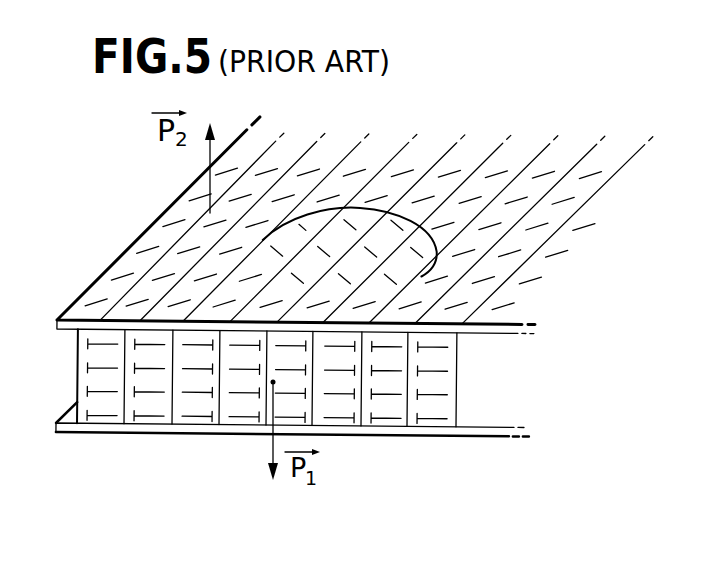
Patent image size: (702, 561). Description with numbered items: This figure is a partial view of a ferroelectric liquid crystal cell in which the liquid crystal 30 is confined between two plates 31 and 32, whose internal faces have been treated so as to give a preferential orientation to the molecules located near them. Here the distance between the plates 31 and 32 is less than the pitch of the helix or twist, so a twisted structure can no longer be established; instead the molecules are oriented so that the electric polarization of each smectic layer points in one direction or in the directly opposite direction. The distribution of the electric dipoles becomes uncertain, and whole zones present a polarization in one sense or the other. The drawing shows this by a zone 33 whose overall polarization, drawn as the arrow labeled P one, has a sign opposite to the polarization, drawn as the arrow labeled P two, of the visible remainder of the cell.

The liquid crystal 30 is at (98, 375).
The plate 31 is at (131, 258).
The plate 32 is at (71, 426).
The zone 33 is at (230, 446).